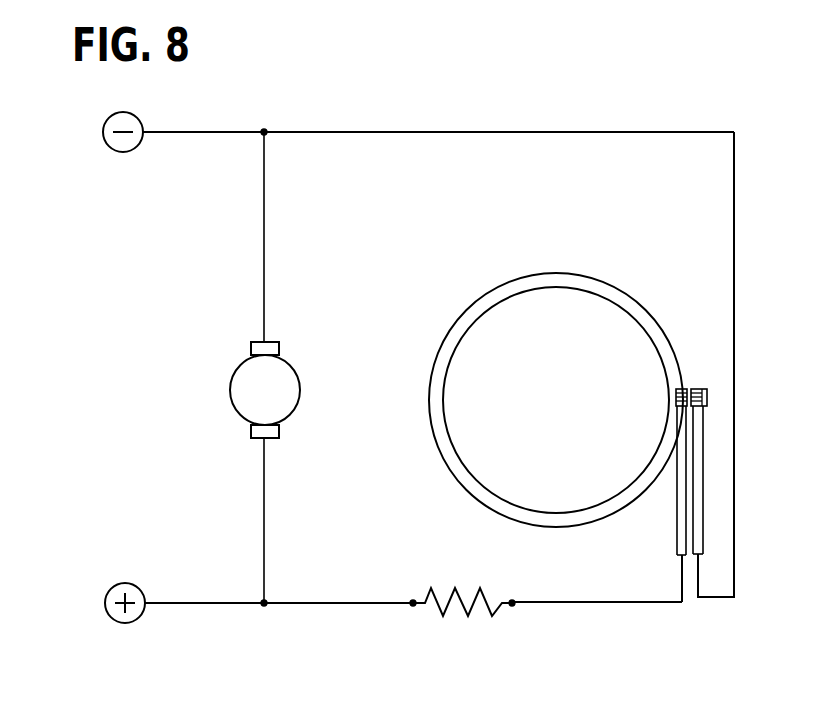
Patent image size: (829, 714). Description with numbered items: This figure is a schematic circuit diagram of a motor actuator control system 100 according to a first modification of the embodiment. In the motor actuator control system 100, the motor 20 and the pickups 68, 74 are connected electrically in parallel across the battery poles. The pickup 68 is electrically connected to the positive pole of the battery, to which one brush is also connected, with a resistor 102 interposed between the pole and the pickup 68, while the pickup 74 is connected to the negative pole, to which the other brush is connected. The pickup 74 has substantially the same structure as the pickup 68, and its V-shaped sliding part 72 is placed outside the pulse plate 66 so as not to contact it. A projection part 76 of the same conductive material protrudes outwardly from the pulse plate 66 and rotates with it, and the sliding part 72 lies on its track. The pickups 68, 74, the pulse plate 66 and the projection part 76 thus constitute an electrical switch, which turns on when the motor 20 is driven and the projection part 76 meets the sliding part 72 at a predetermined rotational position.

The motor actuator control system 100 is at (564, 95).
The motor 20 is at (232, 409).
The pulse plate 66 is at (535, 278).
The sliding part 72 is at (697, 388).
The projection part 76 is at (712, 389).
The pickup 68 is at (678, 543).
The pickup 74 is at (703, 548).
The resistor 102 is at (500, 607).